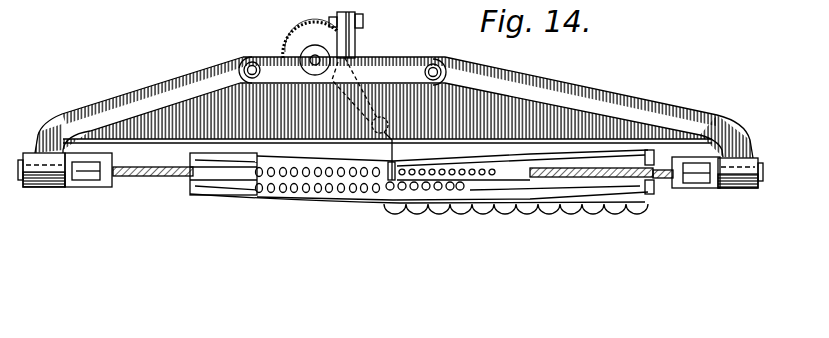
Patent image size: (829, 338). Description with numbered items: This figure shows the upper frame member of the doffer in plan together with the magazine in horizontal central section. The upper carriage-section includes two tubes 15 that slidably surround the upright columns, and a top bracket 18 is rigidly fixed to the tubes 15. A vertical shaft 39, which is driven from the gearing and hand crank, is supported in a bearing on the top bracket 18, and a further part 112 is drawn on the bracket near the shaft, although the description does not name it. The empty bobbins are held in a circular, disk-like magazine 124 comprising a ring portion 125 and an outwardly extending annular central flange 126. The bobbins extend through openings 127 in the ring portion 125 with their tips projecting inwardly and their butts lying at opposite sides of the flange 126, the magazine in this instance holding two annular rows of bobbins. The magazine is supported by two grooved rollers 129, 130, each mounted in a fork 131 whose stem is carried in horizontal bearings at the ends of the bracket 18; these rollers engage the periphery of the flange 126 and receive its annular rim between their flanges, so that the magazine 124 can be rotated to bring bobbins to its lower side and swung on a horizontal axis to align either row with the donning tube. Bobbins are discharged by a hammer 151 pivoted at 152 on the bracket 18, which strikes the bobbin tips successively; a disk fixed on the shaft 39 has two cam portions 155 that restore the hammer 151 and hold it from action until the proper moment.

The tubes 15 is at (252, 62).
The top bracket 18 is at (387, 76).
The vertical shaft 39 is at (314, 58).
The bracket block 112 is at (340, 13).
The magazine 124 is at (422, 197).
The ring portion 125 is at (200, 193).
The annular central flange 126 is at (152, 176).
The openings 127 is at (190, 158).
The grooved roller 129 is at (98, 187).
The grooved roller 130 is at (683, 186).
The fork 131 is at (78, 187).
The hammer 151 is at (388, 160).
The pivot 152 is at (363, 21).
The cam portions 155 is at (300, 50).